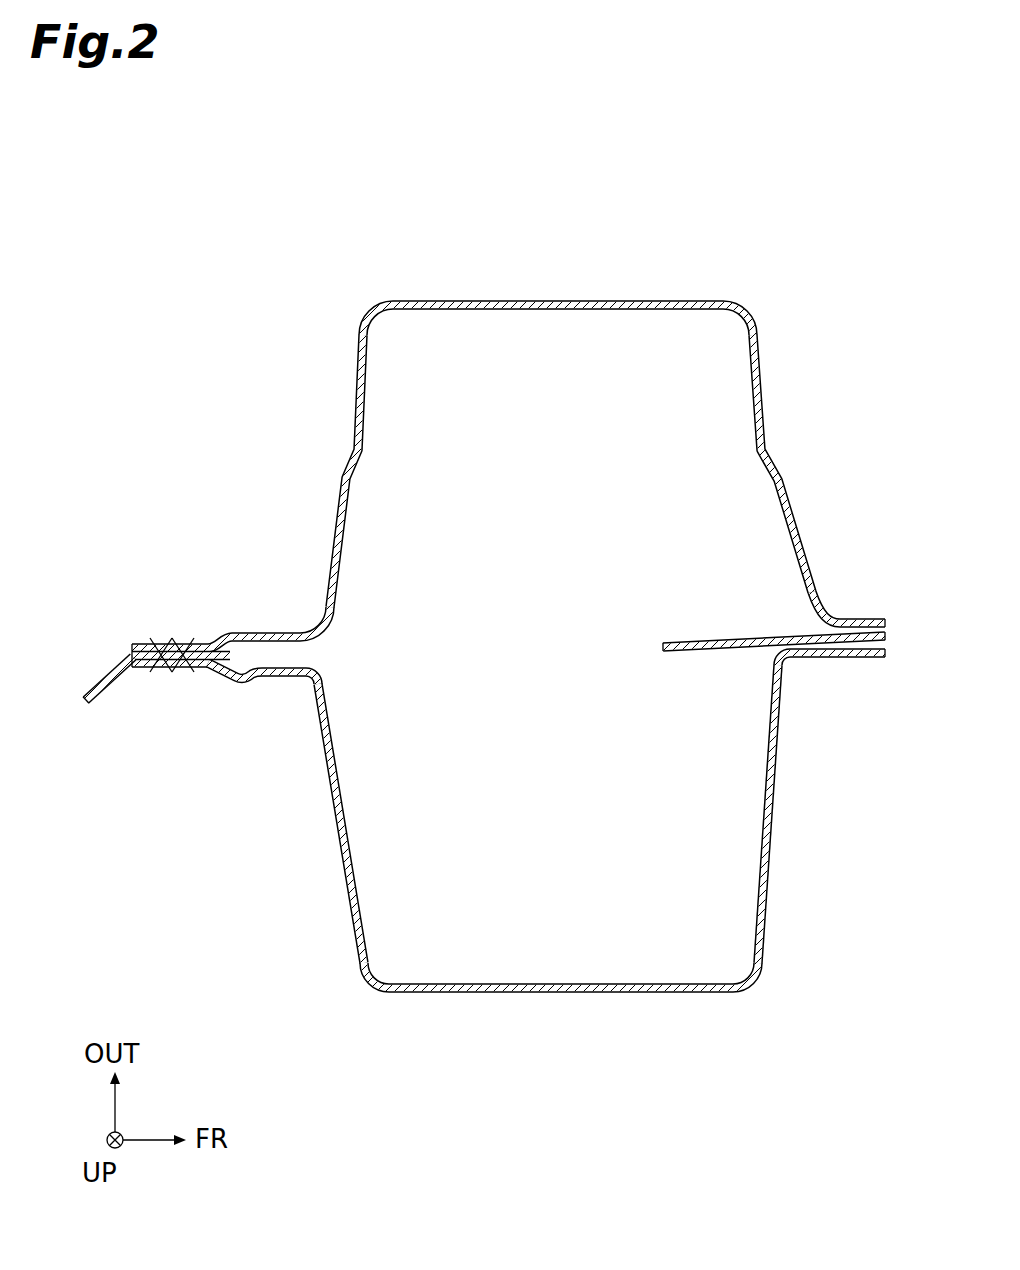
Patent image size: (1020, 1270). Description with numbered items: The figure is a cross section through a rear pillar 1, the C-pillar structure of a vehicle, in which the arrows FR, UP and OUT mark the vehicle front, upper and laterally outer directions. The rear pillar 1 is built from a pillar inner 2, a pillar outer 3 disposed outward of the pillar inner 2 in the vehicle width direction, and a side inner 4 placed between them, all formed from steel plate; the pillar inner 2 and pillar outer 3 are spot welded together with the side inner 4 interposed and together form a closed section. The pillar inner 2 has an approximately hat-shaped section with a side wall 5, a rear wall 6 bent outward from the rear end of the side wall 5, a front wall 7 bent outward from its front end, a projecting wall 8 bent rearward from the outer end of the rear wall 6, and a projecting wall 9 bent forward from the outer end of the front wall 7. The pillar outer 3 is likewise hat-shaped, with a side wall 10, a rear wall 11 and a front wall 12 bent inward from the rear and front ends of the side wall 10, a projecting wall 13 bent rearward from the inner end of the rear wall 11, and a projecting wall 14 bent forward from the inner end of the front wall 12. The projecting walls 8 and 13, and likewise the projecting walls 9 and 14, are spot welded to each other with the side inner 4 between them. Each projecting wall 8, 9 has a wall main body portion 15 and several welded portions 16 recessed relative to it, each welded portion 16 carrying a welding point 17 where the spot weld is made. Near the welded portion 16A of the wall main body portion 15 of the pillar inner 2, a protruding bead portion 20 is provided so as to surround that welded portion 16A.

The rear pillar 1 is at (198, 204).
The pillar inner 2 is at (634, 998).
The pillar outer 3 is at (577, 294).
The side inner 4 is at (98, 688).
The side wall 5 is at (521, 993).
The rear wall 6 is at (340, 838).
The front wall 7 is at (777, 815).
The projecting wall 8 is at (287, 679).
The projecting wall 9 is at (845, 658).
The side wall 10 is at (487, 300).
The rear wall 11 is at (357, 394).
The front wall 12 is at (762, 410).
The projecting wall 13 is at (276, 631).
The projecting wall 14 is at (855, 617).
The wall main body portion 15 is at (573, 668).
The welded portion 16 is at (179, 719).
The welded portion 16A is at (196, 668).
The welding point 17 is at (165, 644).
The protruding bead portion 20 is at (240, 684).